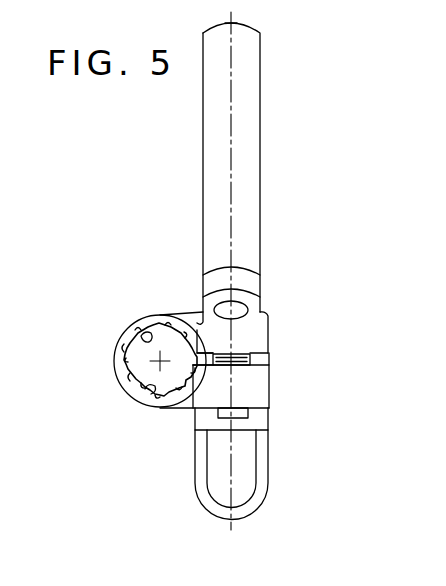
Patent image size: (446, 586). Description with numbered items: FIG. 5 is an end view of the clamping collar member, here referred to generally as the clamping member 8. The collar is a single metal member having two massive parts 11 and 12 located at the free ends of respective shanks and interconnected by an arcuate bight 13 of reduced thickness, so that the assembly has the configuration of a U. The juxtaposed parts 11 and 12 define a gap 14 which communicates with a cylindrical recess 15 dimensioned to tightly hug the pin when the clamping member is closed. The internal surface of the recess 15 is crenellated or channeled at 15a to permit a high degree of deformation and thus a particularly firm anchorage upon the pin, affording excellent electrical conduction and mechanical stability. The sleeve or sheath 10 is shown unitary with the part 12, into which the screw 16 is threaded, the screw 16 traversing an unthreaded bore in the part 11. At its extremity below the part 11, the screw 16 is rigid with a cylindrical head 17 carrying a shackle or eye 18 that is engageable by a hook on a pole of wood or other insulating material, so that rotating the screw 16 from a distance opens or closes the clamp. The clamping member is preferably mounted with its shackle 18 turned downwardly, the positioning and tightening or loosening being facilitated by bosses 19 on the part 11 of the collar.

The clamping device 8 is at (187, 492).
The sleeve or sheath 10 is at (255, 167).
The massive part 11 is at (262, 385).
The massive part 12 is at (262, 342).
The arcuate bight 13 is at (116, 378).
The gap 14 is at (262, 359).
The cylindrical recess 15 is at (152, 338).
The crenellated internal surface 15a is at (152, 386).
The screw 16 is at (220, 365).
The cylindrical head 17 is at (268, 423).
The shackle or eye 18 is at (246, 503).
The bosses 19 is at (237, 418).